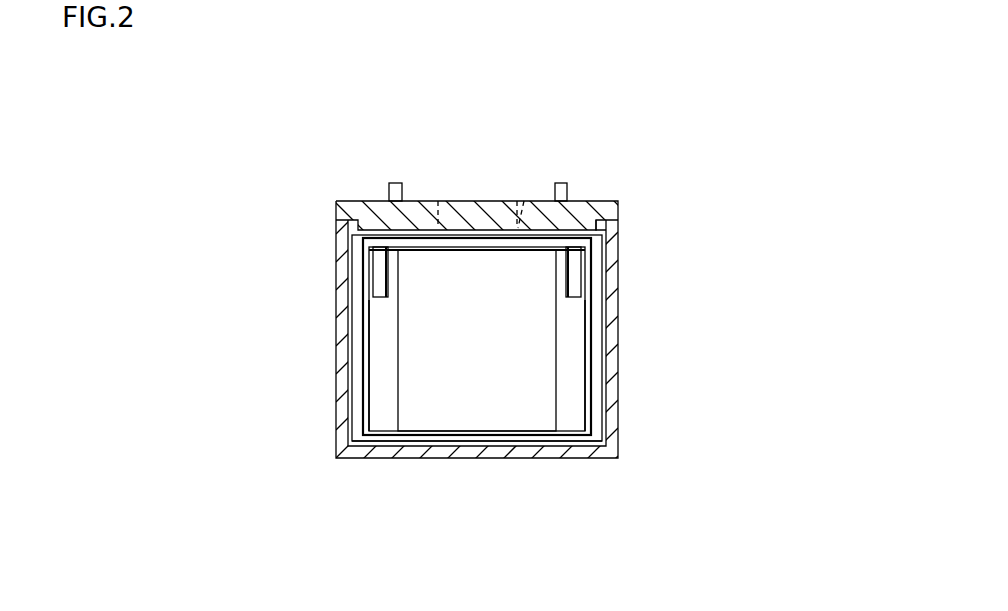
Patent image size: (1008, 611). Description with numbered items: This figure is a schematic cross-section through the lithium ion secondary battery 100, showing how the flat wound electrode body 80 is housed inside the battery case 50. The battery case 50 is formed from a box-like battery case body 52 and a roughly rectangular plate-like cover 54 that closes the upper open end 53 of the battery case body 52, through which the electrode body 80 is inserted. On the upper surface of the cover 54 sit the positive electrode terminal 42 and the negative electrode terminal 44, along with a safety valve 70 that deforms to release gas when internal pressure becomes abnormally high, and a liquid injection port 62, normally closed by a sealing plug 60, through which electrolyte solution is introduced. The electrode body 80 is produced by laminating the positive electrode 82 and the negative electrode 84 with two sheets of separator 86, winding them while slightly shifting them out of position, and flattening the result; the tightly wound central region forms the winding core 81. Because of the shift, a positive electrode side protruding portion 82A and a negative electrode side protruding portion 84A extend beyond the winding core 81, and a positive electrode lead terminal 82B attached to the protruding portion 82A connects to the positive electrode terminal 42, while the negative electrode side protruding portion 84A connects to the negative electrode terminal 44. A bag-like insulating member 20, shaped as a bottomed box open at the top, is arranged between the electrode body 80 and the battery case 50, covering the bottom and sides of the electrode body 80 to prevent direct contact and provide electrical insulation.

The lithium ion secondary battery 100 is at (776, 156).
The insulating member 20 is at (591, 360).
The positive electrode terminal 42 is at (395, 183).
The negative electrode terminal 44 is at (560, 183).
The battery case 50 is at (333, 323).
The battery case body 52 is at (337, 375).
The upper open end 53 is at (601, 238).
The cover 54 is at (338, 206).
The sealing plug 60 is at (517, 201).
The liquid injection port 62 is at (524, 201).
The safety valve 70 is at (438, 201).
The electrode body 80 is at (463, 250).
The winding core 81 is at (512, 398).
The positive electrode 82 is at (367, 417).
The positive electrode side protruding portion 82A is at (383, 417).
The positive electrode lead terminal 82B is at (377, 267).
The negative electrode 84 is at (589, 393).
The negative electrode side protruding portion 84A is at (580, 270).
The separator 86 is at (457, 437).